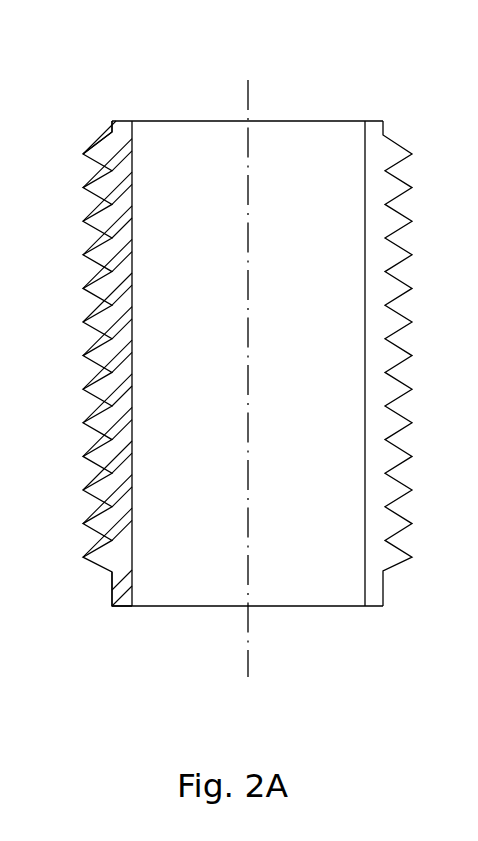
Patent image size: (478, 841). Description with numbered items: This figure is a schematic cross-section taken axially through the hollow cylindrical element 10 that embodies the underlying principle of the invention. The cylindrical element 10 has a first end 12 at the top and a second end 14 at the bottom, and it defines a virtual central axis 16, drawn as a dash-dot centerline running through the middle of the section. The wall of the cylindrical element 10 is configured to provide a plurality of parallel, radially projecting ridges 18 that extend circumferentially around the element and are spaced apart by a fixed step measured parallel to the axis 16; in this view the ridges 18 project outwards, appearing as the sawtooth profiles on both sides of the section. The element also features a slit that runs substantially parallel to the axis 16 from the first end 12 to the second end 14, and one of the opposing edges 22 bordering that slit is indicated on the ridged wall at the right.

The cylindrical element 10 is at (295, 67).
The first end 12 is at (110, 138).
The second end 14 is at (122, 592).
The virtual central axis 16 is at (250, 672).
The radially projecting ridges 18 is at (120, 260).
The edge 22 is at (410, 555).